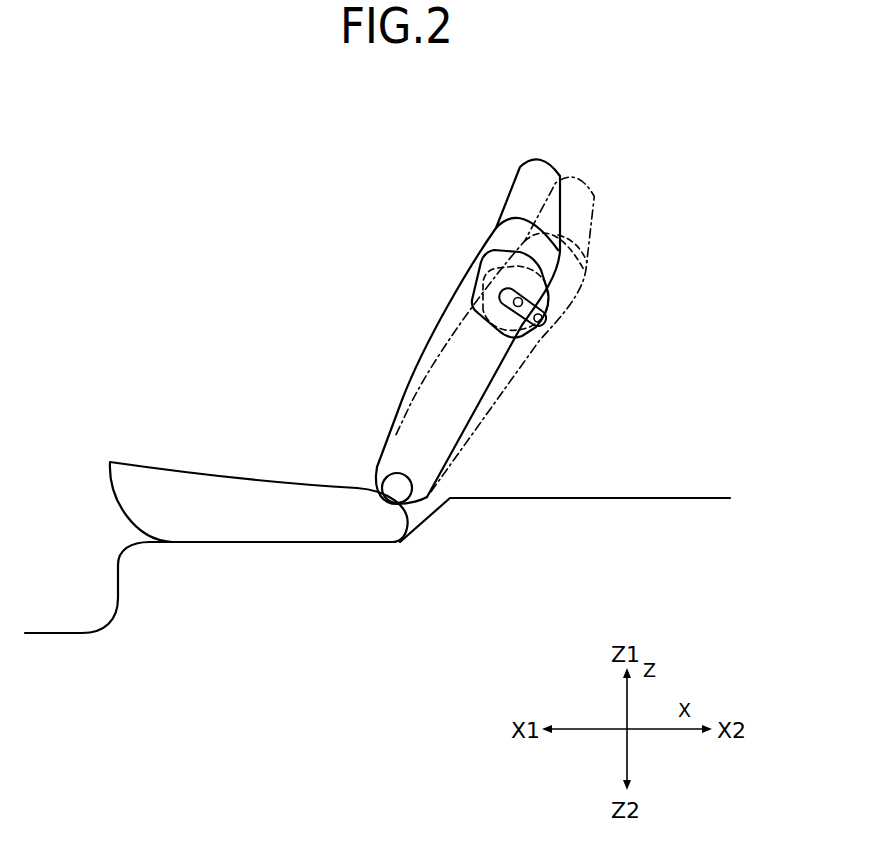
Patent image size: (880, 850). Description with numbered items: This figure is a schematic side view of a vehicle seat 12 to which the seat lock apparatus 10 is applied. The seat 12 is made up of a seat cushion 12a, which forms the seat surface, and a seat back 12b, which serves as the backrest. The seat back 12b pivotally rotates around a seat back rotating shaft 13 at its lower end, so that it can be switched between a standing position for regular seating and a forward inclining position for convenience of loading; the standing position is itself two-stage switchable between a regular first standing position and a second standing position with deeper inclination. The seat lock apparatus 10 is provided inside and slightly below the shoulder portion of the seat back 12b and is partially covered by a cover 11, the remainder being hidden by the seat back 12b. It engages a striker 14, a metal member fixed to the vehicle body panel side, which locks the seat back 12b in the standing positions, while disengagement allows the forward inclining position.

The seat lock apparatus 10 is at (560, 278).
The cover 11 is at (535, 260).
The seat 12 is at (437, 177).
The seat cushion 12a is at (243, 495).
The seat back 12b is at (440, 306).
The seat back rotating shaft 13 is at (412, 500).
The striker 14 is at (540, 312).